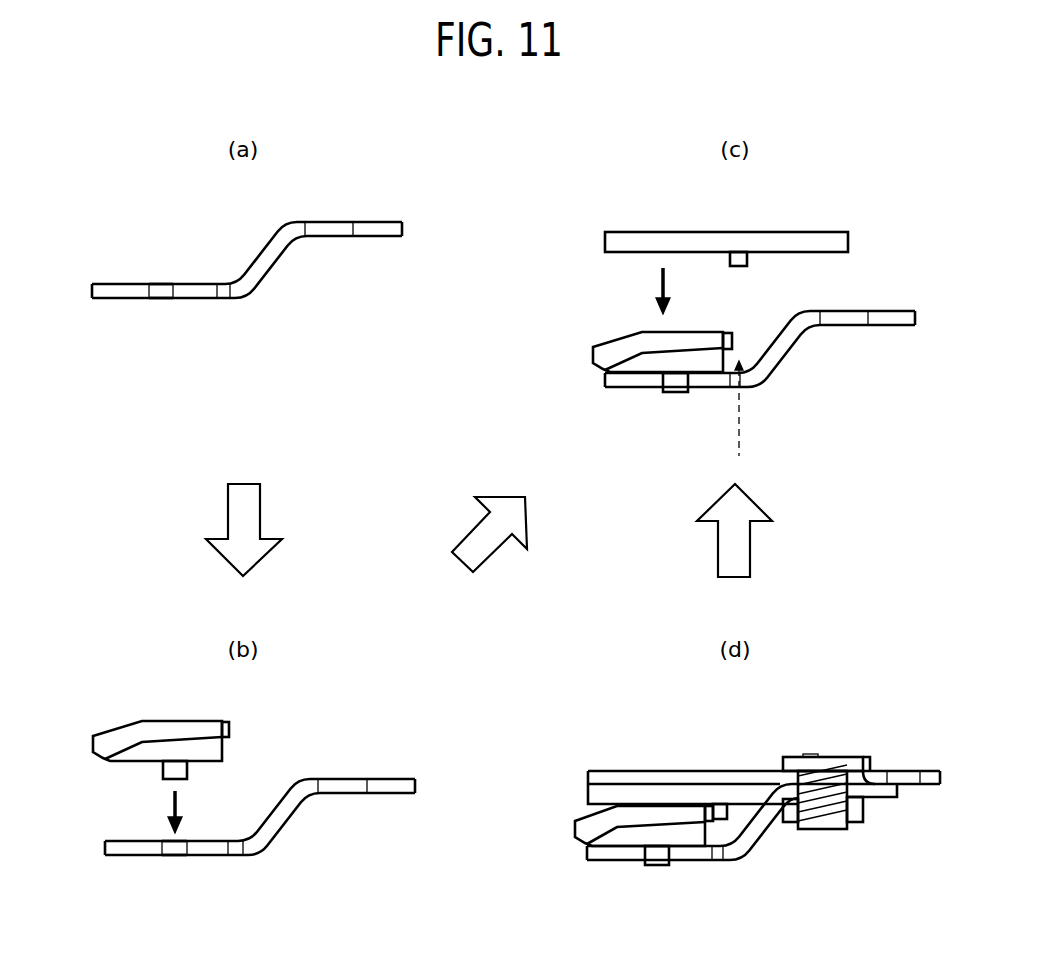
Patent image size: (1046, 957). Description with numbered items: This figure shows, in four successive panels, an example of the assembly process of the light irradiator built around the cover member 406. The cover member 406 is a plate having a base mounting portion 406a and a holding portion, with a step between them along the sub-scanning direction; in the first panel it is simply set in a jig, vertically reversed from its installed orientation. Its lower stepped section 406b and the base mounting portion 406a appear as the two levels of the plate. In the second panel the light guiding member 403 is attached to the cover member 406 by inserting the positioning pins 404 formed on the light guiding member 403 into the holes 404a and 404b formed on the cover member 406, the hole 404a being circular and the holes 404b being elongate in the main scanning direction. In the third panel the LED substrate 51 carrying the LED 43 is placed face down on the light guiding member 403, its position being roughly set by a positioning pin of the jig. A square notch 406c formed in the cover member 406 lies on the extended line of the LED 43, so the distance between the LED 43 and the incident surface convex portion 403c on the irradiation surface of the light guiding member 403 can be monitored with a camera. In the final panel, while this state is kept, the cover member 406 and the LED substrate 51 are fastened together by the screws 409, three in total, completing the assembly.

The LED substrate 51 is at (683, 243).
The LED 43 is at (738, 250).
The light guiding member 403 is at (122, 732).
The incident surface convex portion 403c is at (230, 726).
The positioning pin 404 is at (163, 775).
The hole 404a is at (160, 301).
The hole 404b is at (186, 600).
The cover member 406 is at (305, 266).
The base mounting portion 406a is at (368, 222).
The lower plate portion 406b is at (120, 285).
The notch 406c is at (222, 285).
The screw 409 is at (833, 762).